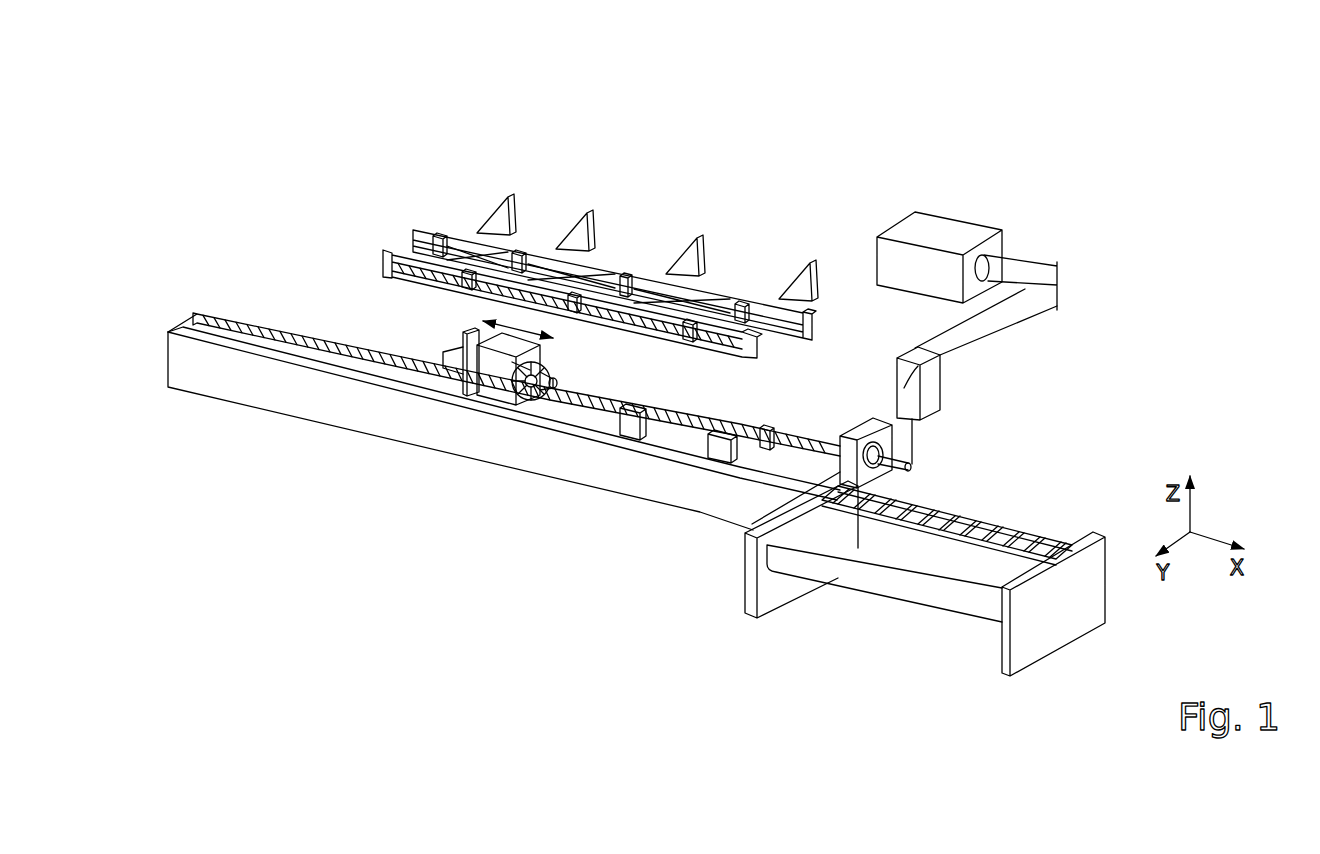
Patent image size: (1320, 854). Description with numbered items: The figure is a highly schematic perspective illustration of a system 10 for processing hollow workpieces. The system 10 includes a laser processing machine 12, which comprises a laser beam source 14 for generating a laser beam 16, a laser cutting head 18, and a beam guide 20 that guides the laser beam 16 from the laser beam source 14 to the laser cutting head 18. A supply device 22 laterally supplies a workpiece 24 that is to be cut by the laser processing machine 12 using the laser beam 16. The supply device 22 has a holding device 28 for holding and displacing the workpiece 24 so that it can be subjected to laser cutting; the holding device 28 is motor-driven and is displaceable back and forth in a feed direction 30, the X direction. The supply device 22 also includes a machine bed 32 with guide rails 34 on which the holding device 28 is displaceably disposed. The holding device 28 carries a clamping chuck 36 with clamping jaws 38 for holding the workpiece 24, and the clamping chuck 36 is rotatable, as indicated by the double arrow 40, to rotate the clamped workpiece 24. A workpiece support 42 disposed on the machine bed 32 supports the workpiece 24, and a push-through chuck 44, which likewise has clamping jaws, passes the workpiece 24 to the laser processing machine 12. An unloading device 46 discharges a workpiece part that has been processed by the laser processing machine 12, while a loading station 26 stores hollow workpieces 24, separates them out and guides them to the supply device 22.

The system for processing hollow workpieces 10 is at (302, 188).
The laser processing machine 12 is at (883, 201).
The laser beam source 14 is at (950, 233).
The laser beam 16 is at (1045, 300).
The laser cutting head 18 is at (932, 383).
The beam guide 20 is at (998, 333).
The supply device 22 is at (426, 335).
The workpiece 24 is at (432, 230).
The loading station 26 is at (688, 246).
The holding device 28 is at (502, 353).
The feed direction 30 is at (522, 322).
The machine bed 32 is at (278, 400).
The guide rails 34 is at (207, 330).
The clamping chuck 36 is at (530, 393).
The clamping jaws 38 is at (534, 392).
The double arrow 40 is at (560, 380).
The workpiece support 42 is at (705, 448).
The push-through chuck 44 is at (818, 462).
The unloading device 46 is at (914, 630).